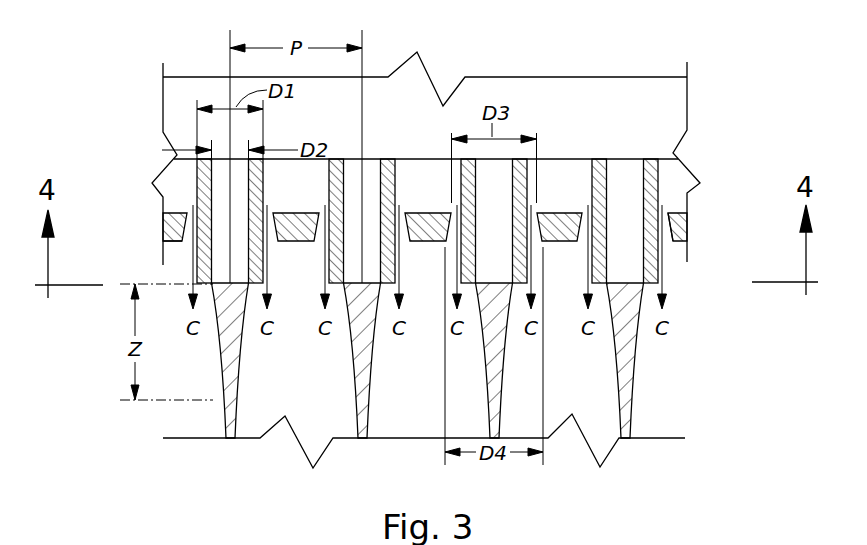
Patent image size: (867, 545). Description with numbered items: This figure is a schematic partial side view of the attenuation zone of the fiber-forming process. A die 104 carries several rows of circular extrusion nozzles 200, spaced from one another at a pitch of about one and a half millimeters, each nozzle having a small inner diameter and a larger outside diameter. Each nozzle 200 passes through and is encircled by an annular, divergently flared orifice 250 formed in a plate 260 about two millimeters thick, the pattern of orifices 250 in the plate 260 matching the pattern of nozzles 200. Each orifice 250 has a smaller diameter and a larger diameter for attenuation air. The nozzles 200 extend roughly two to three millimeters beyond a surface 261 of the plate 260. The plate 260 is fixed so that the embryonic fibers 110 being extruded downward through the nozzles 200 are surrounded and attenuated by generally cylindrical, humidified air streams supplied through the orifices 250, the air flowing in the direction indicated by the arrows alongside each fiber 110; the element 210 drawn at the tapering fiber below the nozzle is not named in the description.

The die 104 is at (630, 95).
The extrusion nozzle 200 is at (654, 174).
The plate 260 is at (685, 226).
The surface of the plate 261 is at (153, 240).
The divergently flared orifice 250 is at (666, 241).
The tapered pin 210 is at (626, 333).
The embryonic fiber 110 is at (624, 380).